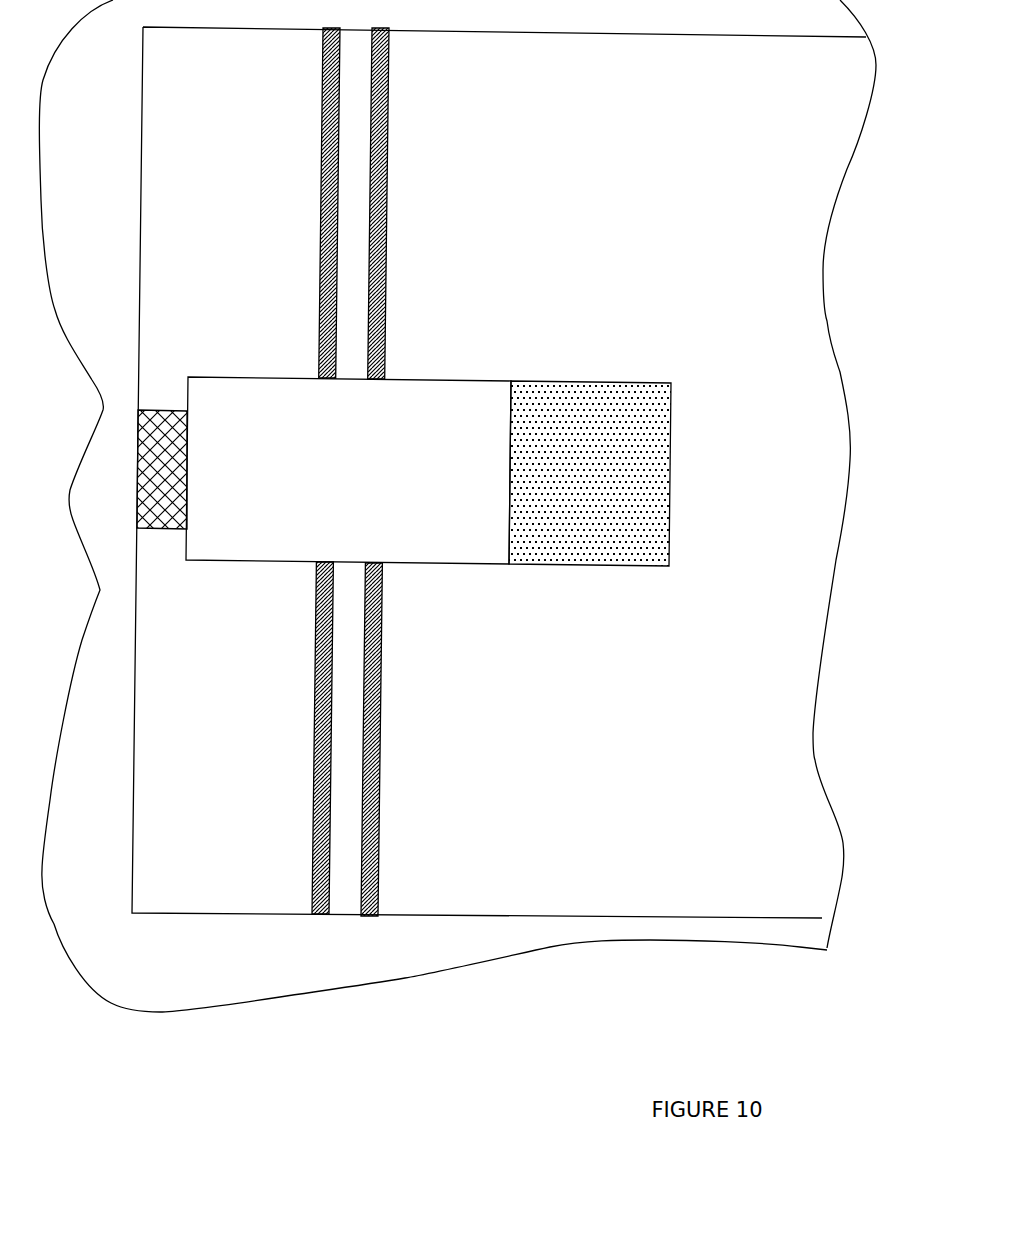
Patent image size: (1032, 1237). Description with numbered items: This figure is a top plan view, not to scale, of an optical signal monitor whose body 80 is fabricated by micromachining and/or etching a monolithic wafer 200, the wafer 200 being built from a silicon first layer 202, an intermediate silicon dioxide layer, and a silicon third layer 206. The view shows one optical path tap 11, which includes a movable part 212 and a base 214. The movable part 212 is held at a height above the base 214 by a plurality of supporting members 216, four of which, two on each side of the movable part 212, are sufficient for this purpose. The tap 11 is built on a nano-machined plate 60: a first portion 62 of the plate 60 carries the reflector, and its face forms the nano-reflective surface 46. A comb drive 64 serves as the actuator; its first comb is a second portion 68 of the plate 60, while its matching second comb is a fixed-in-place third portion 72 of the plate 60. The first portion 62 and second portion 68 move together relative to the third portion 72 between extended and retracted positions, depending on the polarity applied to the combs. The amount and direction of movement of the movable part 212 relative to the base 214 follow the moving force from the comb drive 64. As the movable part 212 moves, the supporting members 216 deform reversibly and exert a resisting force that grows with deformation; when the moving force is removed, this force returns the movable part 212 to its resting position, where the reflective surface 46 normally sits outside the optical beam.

The optical path tap 11 is at (745, 391).
The nano-reflective surface 46 is at (587, 425).
The nano-machined plate 60 is at (624, 655).
The first portion of plate 62 is at (498, 617).
The comb drive system 64 is at (160, 422).
The second portion of plate 68 is at (233, 598).
The third portion of plate 72 is at (150, 577).
The body 80 is at (590, 975).
The monolithic wafer 200 is at (279, 997).
The first layer 202 is at (351, 961).
The third layer 206 is at (456, 890).
The movable part 212 is at (428, 388).
The base 214 is at (627, 213).
The supporting members 216 is at (330, 198).